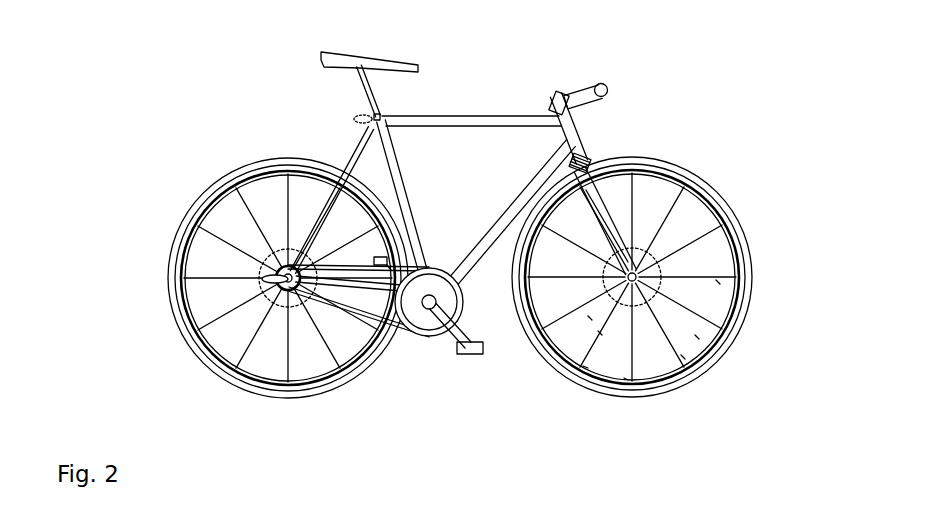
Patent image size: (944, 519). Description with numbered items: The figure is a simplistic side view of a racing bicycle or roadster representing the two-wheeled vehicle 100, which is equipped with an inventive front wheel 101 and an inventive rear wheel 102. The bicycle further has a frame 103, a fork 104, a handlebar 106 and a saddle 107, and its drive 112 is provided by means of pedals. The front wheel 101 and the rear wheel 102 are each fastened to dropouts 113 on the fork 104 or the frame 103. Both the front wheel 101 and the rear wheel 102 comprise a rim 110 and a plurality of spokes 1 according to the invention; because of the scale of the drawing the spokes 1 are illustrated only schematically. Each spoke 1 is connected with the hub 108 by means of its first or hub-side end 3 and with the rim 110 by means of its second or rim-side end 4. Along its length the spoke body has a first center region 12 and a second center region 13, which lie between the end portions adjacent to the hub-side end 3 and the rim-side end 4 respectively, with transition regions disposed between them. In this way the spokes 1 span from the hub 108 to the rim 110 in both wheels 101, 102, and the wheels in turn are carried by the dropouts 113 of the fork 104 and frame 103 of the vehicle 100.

The two-wheeled vehicle 100 is at (205, 83).
The front wheel 101 is at (725, 202).
The rear wheel 102 is at (197, 208).
The frame 103 is at (478, 115).
The fork 104 is at (595, 198).
The handlebar 106 is at (583, 88).
The saddle 107 is at (356, 60).
The hub 108 is at (678, 268).
The rim 110 is at (728, 318).
The drive 112 is at (443, 254).
The dropouts 113 is at (635, 264).
The spokes 1 is at (718, 282).
The first or hub-side end 3 is at (590, 318).
The second or rim-side end 4 is at (590, 358).
The first center region 12 is at (697, 337).
The second center region 13 is at (683, 357).